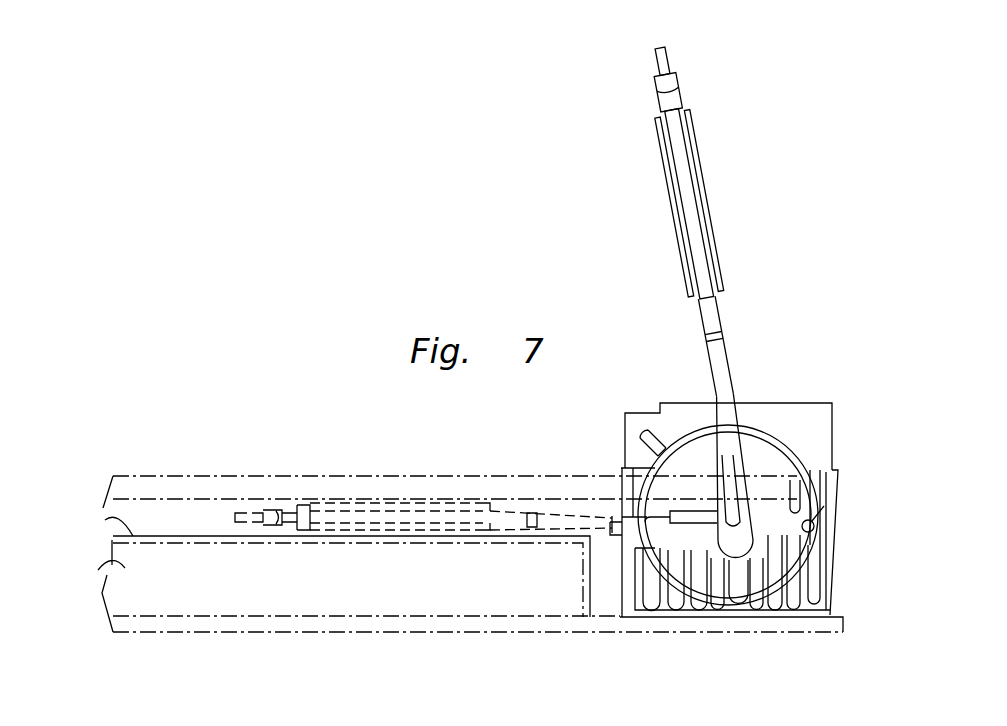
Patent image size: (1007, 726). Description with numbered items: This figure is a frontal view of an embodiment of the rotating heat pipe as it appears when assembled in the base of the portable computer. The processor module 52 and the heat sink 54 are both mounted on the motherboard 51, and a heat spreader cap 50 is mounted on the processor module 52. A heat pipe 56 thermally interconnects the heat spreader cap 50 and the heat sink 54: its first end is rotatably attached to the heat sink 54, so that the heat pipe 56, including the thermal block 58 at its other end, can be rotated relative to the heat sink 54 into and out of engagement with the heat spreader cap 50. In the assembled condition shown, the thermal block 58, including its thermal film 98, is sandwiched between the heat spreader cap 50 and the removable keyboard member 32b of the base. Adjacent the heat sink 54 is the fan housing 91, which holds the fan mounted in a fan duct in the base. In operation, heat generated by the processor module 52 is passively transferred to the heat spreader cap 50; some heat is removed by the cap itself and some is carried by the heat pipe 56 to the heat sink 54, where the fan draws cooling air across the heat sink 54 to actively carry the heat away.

The thermal block 58 is at (681, 134).
The thermal film 98 is at (672, 211).
The heat pipe 56 is at (727, 354).
The fan housing 91 is at (833, 436).
The heat sink 54 is at (839, 507).
The second or keyboard member 32b is at (183, 475).
The heat spreader cap 50 is at (107, 522).
The processor module 52 is at (108, 568).
The motherboard 51 is at (511, 634).